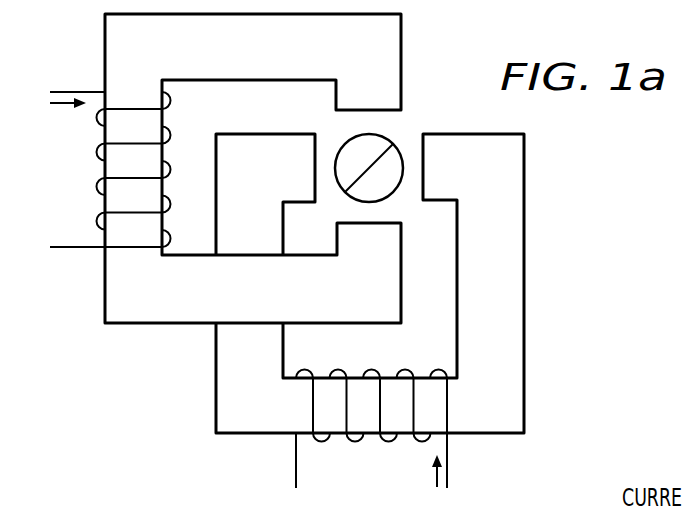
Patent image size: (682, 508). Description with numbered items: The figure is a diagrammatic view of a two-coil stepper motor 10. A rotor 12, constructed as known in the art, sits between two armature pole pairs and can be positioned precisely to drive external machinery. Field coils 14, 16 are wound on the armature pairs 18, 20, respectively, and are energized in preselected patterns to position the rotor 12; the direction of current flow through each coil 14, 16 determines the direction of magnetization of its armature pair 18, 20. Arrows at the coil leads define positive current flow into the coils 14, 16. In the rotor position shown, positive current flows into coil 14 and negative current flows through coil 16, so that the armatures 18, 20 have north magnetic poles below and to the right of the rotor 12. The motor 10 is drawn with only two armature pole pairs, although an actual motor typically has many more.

The stepper motor 10 is at (123, 382).
The rotor 12 is at (399, 136).
The field coil 14 is at (62, 92).
The field coil 16 is at (295, 455).
The armature pair 18 is at (355, 67).
The armature pair 20 is at (475, 179).